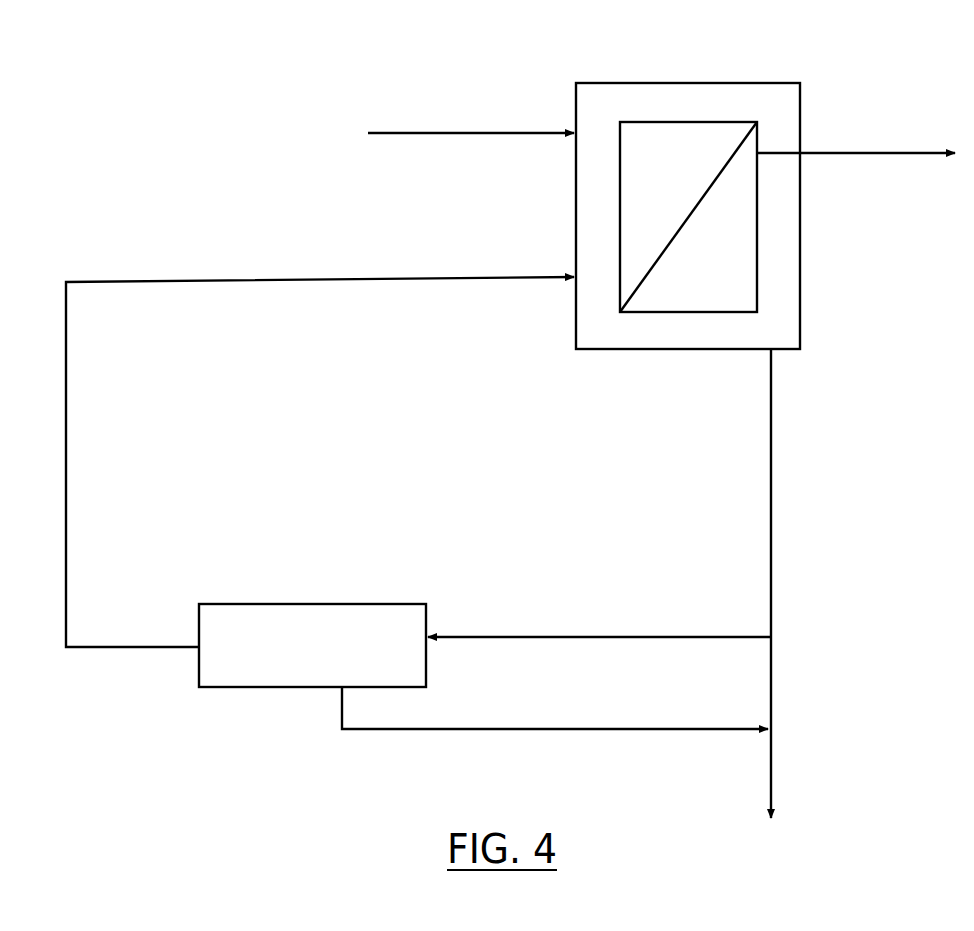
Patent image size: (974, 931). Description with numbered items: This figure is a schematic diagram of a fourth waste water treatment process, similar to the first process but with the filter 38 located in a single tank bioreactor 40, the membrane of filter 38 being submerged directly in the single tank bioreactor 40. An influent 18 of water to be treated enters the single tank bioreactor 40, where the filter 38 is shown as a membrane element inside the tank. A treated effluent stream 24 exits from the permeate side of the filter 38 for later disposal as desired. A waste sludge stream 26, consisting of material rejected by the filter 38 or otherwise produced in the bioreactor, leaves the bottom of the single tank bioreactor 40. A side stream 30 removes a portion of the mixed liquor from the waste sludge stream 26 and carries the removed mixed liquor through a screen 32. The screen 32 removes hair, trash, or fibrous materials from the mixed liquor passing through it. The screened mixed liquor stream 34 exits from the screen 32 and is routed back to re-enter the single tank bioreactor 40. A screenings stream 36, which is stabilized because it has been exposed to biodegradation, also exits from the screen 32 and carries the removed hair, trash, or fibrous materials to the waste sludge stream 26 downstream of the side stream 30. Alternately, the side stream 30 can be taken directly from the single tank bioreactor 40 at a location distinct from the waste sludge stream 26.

The influent 18 is at (438, 133).
The treated effluent stream 24 is at (840, 153).
The waste sludge stream 26 is at (771, 495).
The side stream 30 is at (565, 637).
The screen 32 is at (293, 604).
The screened mixed liquor stream 34 is at (66, 500).
The screenings stream 36 is at (615, 729).
The filter 38 is at (757, 258).
The single tank bioreactor 40 is at (700, 83).